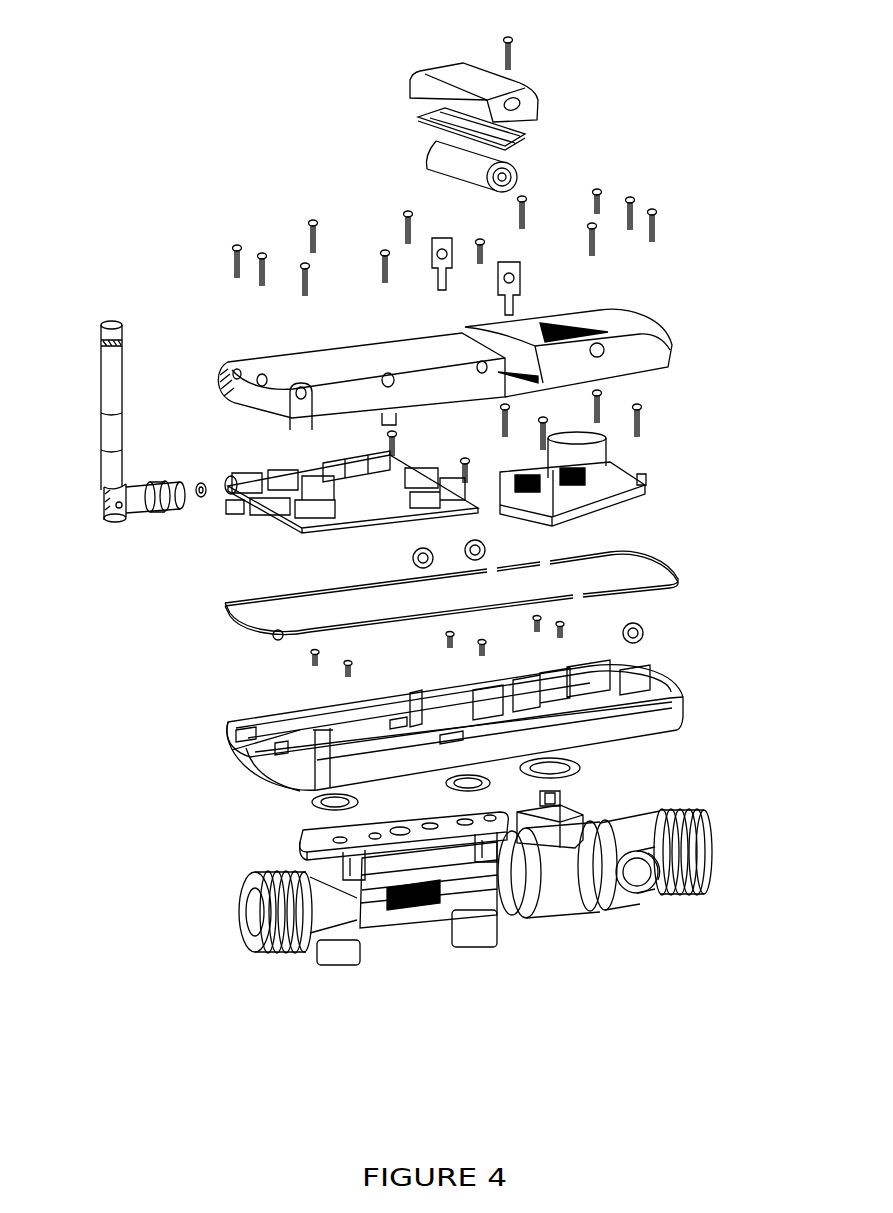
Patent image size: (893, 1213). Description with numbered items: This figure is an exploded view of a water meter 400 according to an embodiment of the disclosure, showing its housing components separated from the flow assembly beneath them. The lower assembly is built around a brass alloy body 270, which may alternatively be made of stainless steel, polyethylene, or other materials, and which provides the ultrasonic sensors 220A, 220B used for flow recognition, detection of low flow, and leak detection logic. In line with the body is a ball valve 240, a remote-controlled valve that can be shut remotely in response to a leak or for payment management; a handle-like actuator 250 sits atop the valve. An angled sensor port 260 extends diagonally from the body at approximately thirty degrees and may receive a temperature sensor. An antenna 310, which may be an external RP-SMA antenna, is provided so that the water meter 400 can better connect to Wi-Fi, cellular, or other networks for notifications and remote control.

The water meter 400 is at (368, 412).
The antenna 310 is at (105, 523).
The ultrasonic sensor 220A is at (485, 918).
The ultrasonic sensor 220B is at (338, 933).
The ball valve 240 is at (570, 898).
The valve actuator stem 250 is at (575, 790).
The angled sensor port 260 is at (643, 880).
The brass alloy body 270 is at (654, 834).